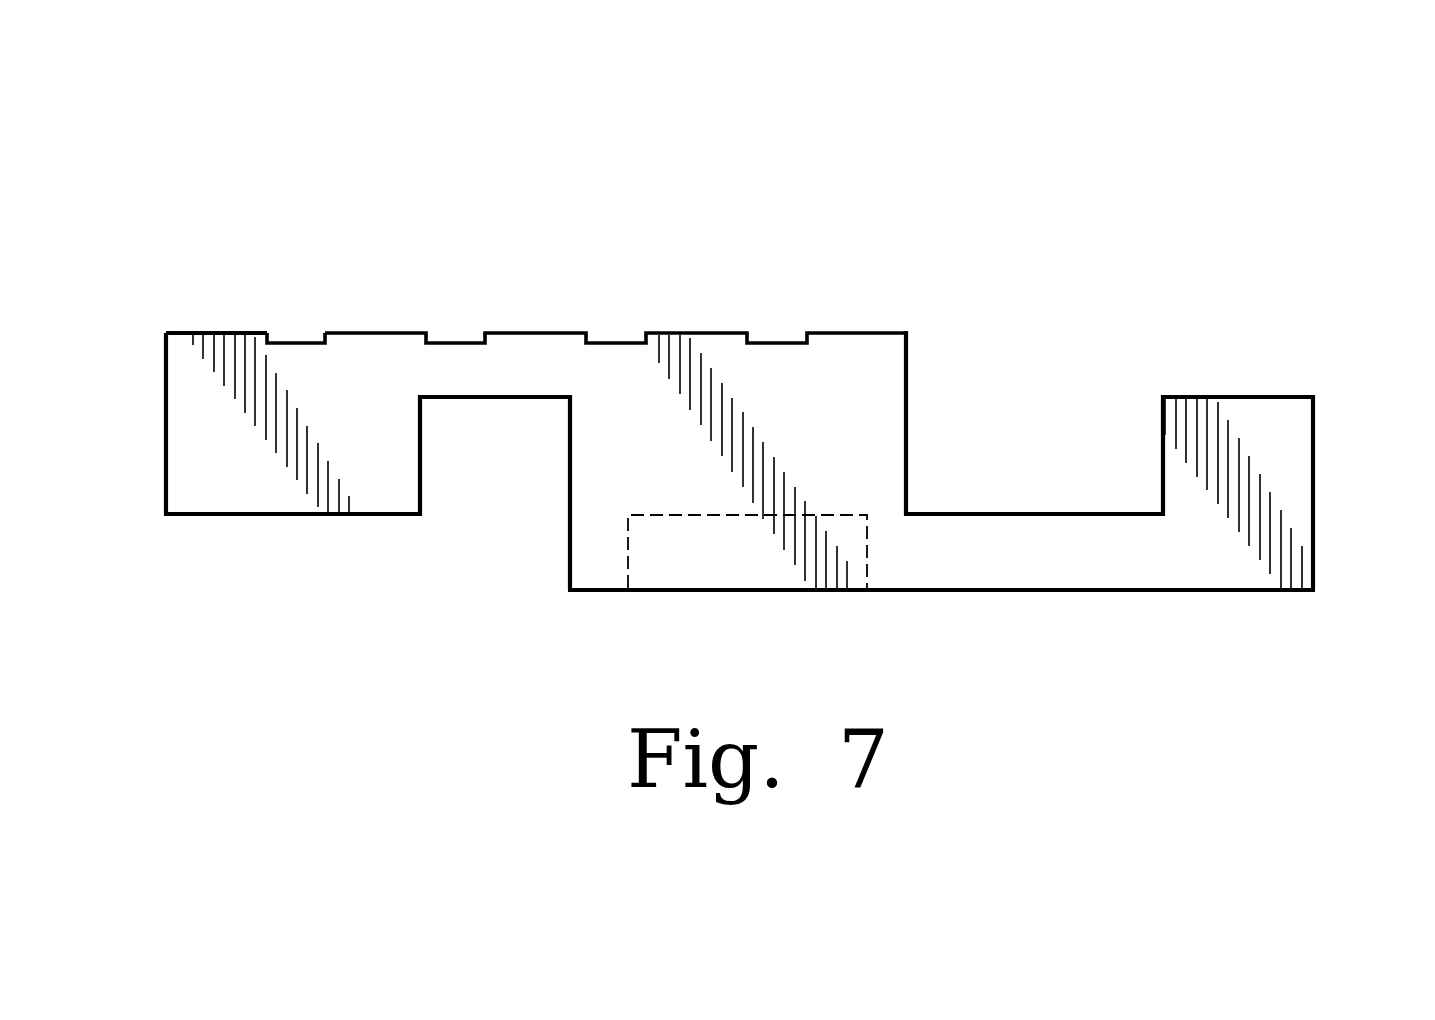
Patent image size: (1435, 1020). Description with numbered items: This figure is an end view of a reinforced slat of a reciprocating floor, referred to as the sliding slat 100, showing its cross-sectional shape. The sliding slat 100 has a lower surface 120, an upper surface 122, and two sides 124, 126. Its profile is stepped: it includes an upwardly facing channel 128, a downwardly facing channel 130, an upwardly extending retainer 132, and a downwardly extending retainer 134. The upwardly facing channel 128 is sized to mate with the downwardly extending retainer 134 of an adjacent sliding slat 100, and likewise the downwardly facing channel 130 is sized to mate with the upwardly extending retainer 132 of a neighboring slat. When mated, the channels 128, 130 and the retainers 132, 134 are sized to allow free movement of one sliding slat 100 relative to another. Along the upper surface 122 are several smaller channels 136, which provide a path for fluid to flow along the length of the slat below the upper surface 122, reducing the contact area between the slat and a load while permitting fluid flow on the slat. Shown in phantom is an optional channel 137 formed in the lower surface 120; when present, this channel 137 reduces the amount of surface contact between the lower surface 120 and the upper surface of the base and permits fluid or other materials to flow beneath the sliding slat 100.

The sliding slat 100 is at (1078, 195).
The lower surface 120 is at (1090, 595).
The upper surface 122 is at (540, 333).
The side 124 is at (165, 425).
The side 126 is at (1318, 488).
The upwardly facing channel 128 is at (1008, 392).
The downwardly facing channel 130 is at (498, 497).
The upwardly extending retainer 132 is at (1256, 380).
The downwardly extending retainer 134 is at (278, 528).
The smaller channels 136 is at (297, 322).
The channel 137 is at (728, 557).